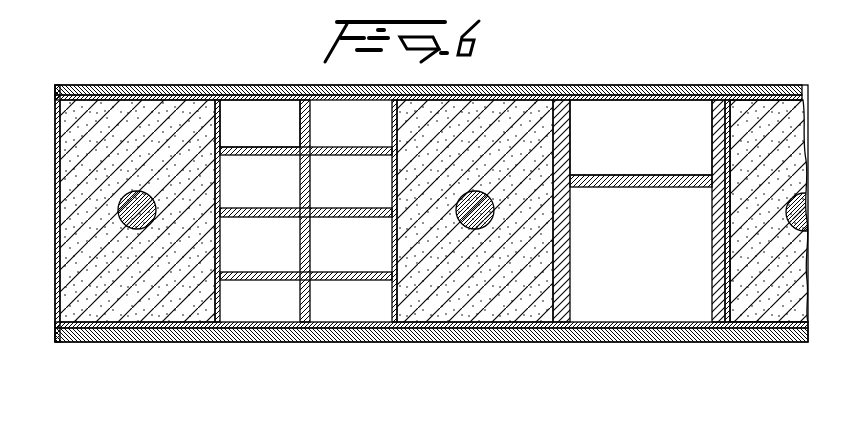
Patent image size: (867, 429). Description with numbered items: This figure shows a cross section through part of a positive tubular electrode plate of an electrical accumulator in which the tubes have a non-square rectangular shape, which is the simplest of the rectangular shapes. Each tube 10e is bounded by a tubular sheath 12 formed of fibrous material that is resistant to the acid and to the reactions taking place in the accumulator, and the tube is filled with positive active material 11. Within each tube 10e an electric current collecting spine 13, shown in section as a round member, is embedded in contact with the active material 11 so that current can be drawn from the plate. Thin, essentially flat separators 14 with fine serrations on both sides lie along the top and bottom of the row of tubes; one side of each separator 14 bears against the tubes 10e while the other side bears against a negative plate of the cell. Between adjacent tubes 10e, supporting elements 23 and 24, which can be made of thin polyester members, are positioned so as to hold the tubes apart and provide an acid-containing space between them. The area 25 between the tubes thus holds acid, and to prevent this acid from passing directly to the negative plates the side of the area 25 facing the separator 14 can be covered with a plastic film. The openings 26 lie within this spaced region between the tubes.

The tube 10e is at (128, 322).
The positive active material 11 is at (450, 282).
The tubular sheath 12 is at (57, 155).
The electric current collecting spine 13 is at (132, 222).
The separator 14 is at (95, 86).
The supporting element 23 is at (345, 283).
The supporting element 24 is at (649, 188).
The area 25 is at (272, 285).
The cell opening 26 is at (258, 130).